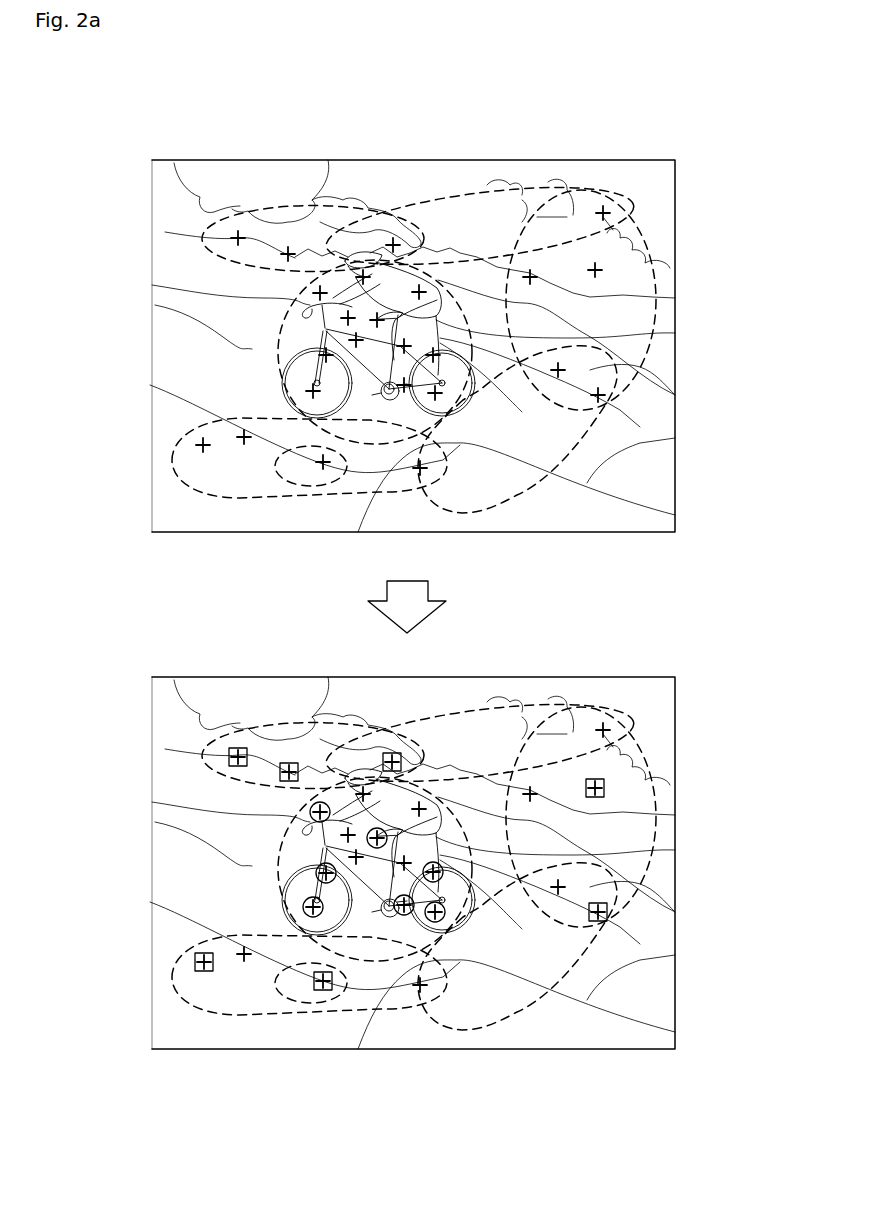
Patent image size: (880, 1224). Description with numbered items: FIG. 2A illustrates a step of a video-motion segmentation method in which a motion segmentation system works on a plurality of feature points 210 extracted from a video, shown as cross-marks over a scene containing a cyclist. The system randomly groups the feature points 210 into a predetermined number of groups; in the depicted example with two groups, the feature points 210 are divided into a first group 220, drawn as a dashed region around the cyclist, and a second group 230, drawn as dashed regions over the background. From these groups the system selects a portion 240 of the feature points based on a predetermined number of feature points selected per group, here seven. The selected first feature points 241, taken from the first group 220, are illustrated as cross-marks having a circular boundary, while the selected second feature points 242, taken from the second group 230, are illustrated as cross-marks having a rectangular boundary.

The feature points 210 is at (681, 176).
The first group 220 is at (278, 323).
The second group 230 is at (218, 236).
The selected portion 240 is at (280, 838).
The first feature points 241 is at (316, 873).
The second feature points 242 is at (314, 980).